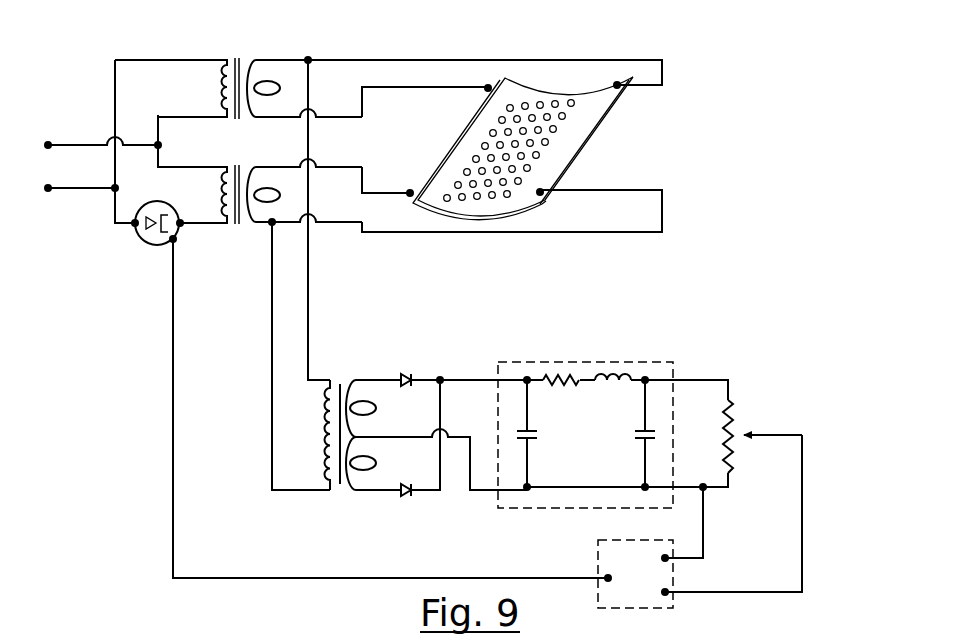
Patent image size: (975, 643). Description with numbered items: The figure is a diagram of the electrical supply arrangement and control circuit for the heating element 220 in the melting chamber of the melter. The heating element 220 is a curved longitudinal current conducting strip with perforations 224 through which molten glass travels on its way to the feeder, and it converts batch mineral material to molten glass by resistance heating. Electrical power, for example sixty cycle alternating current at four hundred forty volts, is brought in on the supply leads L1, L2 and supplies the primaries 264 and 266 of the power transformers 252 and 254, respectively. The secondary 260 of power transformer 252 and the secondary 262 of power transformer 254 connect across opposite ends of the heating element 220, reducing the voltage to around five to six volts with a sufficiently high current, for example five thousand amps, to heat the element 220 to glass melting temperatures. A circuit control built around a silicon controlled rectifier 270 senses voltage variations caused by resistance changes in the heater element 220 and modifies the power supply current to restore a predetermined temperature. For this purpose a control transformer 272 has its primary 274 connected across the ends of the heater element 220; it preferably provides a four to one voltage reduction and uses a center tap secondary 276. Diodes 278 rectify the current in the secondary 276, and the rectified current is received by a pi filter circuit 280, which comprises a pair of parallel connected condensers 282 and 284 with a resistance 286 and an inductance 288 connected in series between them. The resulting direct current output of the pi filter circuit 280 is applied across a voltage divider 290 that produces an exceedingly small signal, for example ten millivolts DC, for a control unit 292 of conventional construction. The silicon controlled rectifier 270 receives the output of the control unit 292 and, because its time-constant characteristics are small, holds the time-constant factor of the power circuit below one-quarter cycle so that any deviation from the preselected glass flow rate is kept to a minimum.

The supply line terminal L1 is at (95, 155).
The supply line terminal L2 is at (74, 200).
The heating element 220 is at (558, 148).
The perforations 224 is at (533, 172).
The power transformer 252 is at (238, 72).
The power transformer 254 is at (260, 180).
The secondary 260 is at (231, 38).
The secondary 262 is at (304, 180).
The primary 264 is at (221, 89).
The primary 266 is at (221, 194).
The silicon controlled rectifier 270 is at (152, 245).
The control transformer 272 is at (372, 403).
The primary 274 is at (327, 428).
The center tap secondary 276 is at (346, 383).
The diodes 278 is at (407, 378).
The pi filter circuit 280 is at (606, 410).
The condenser 282 is at (536, 432).
The condenser 284 is at (638, 438).
The resistance 286 is at (550, 378).
The inductance 288 is at (597, 354).
The voltage divider 290 is at (746, 424).
The control unit 292 is at (598, 541).